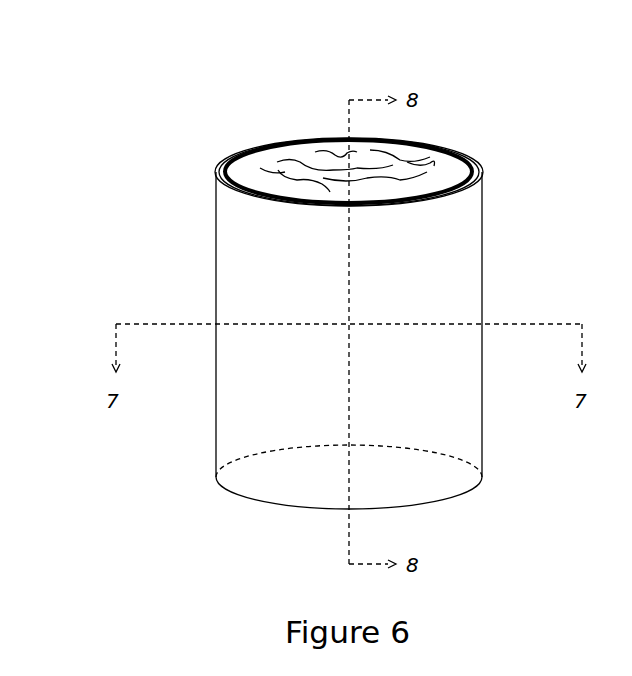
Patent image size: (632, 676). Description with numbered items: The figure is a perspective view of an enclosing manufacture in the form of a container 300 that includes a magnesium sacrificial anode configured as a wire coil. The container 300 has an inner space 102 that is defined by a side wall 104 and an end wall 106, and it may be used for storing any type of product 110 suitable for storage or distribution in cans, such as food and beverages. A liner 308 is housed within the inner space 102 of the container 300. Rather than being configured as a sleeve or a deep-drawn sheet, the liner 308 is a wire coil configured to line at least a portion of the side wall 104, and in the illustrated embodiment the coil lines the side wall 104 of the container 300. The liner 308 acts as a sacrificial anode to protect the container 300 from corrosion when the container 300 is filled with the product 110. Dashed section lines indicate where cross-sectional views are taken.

The container 300 is at (305, 289).
The inner space 102 is at (255, 162).
The product 110 is at (426, 150).
The liner 308 is at (472, 160).
The side wall 104 is at (482, 420).
The end wall 106 is at (447, 500).